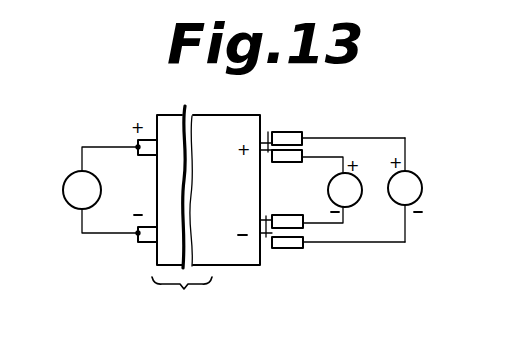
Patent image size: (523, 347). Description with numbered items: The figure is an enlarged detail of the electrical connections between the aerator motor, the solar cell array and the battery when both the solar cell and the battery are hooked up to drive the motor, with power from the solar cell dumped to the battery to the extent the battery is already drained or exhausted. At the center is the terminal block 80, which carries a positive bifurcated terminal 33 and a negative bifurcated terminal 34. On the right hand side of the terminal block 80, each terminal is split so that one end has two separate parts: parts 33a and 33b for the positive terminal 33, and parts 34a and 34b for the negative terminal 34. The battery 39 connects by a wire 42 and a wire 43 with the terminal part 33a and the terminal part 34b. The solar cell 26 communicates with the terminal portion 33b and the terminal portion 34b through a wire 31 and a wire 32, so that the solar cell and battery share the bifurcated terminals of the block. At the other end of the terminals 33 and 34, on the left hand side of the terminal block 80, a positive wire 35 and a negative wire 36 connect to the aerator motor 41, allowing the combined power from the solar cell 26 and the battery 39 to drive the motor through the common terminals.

The solar cell 26 is at (328, 190).
The wire 31 is at (343, 157).
The wire 32 is at (343, 224).
The bifurcated positive terminal 33 is at (265, 132).
The terminal part 33a is at (302, 130).
The terminal portion 33b is at (275, 162).
The bifurcated negative terminal 34 is at (145, 243).
The terminal part 34a is at (277, 222).
The terminal part 34b is at (290, 248).
The positive wire 35 is at (86, 143).
The negative wire 36 is at (88, 235).
The battery 39 is at (419, 177).
The aerator motor 41 is at (66, 179).
The wire 42 is at (405, 138).
The wire 43 is at (382, 242).
The terminal block 80 is at (197, 117).